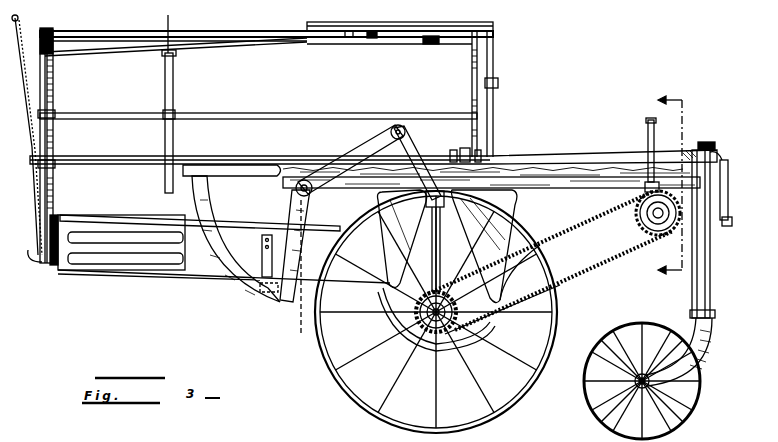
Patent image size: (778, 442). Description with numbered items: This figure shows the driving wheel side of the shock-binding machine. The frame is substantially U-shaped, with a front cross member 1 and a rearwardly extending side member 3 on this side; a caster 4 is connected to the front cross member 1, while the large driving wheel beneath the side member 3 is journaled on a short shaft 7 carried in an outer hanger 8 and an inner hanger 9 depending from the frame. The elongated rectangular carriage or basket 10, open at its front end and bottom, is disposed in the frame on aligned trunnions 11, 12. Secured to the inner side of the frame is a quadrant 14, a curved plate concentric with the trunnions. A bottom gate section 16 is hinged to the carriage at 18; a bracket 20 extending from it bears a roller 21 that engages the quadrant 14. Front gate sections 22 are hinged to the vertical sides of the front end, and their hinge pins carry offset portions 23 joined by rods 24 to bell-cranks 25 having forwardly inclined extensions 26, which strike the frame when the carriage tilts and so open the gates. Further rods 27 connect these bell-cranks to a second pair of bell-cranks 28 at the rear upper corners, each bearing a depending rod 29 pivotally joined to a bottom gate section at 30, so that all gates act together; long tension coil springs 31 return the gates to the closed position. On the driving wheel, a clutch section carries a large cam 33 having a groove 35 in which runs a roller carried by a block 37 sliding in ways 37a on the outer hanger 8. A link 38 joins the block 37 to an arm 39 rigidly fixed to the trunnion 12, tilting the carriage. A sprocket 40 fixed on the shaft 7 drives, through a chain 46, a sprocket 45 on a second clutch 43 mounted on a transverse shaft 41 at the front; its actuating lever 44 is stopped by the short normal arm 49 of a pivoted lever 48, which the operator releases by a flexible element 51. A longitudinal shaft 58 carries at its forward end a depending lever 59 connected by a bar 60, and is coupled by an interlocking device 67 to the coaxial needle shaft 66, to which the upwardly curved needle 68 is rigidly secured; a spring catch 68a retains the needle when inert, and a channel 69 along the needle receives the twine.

The front cross member 1 is at (686, 150).
The side member 3 is at (555, 158).
The caster 4 is at (696, 417).
The short shaft 7 is at (295, 237).
The outer hanger 8 is at (440, 258).
The inner hanger 9 is at (520, 200).
The carriage or basket 10 is at (468, 60).
The trunnion 11 is at (667, 188).
The trunnion 12 is at (297, 191).
The quadrant 14 is at (245, 280).
The gate section 16 is at (128, 272).
The hinge 18 is at (122, 214).
The bracket 20 is at (262, 293).
The roller 21 is at (266, 278).
The gate sections 22 is at (494, 30).
The offset portion 23 is at (460, 34).
The rods 24 is at (400, 31).
The bell-cranks 25 is at (348, 37).
The forwardly inclined extensions 26 is at (352, 44).
The rods 27 is at (110, 47).
The bell-cranks 28 is at (44, 28).
The rod 29 is at (50, 92).
The pivotal connection 30 is at (40, 258).
The tension coil springs 31 is at (28, 252).
The cam 33 is at (395, 322).
The groove 35 is at (418, 335).
The block 37 is at (447, 246).
The ways 37a is at (390, 295).
The link 38 is at (405, 128).
The arm 39 is at (380, 134).
The sprocket 40 is at (458, 320).
The shaft 41 is at (645, 226).
The second clutch 43 is at (655, 232).
The actuating lever 44 is at (658, 165).
The sprocket 45 is at (628, 248).
The chain 46 is at (560, 282).
The lever 48 is at (648, 146).
The short normal arm 49 is at (645, 190).
The flexible element 51 is at (649, 118).
The shaft 58 is at (528, 156).
The lever 59 is at (727, 226).
The bar 60 is at (732, 228).
The needle shaft 66 is at (110, 158).
The interlocking device 67 is at (488, 150).
The needle 68 is at (174, 78).
The spring catch 68a is at (175, 112).
The channel 69 is at (176, 53).